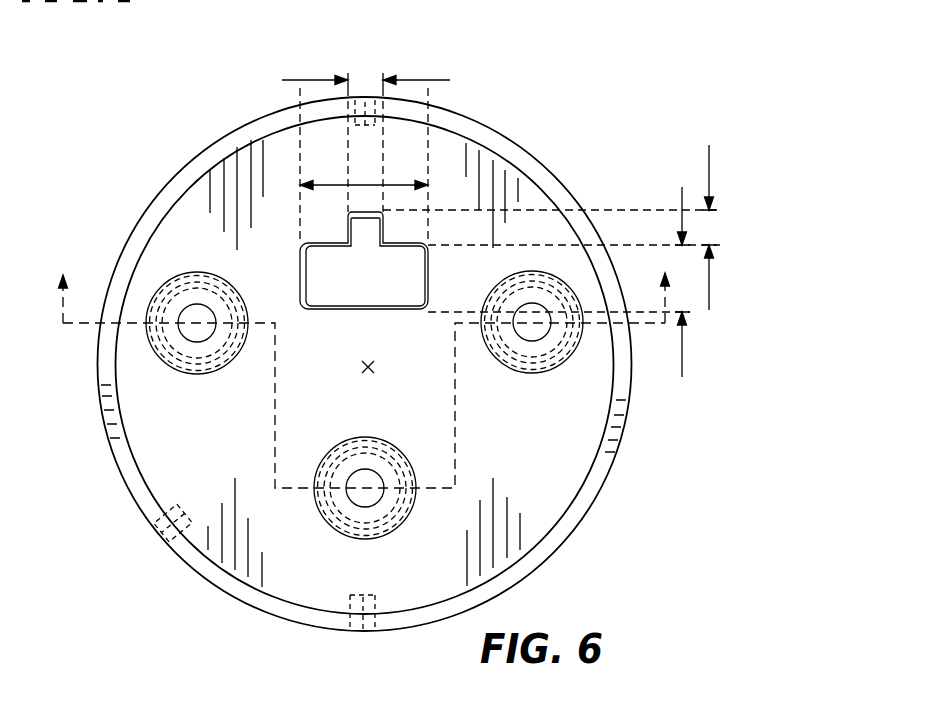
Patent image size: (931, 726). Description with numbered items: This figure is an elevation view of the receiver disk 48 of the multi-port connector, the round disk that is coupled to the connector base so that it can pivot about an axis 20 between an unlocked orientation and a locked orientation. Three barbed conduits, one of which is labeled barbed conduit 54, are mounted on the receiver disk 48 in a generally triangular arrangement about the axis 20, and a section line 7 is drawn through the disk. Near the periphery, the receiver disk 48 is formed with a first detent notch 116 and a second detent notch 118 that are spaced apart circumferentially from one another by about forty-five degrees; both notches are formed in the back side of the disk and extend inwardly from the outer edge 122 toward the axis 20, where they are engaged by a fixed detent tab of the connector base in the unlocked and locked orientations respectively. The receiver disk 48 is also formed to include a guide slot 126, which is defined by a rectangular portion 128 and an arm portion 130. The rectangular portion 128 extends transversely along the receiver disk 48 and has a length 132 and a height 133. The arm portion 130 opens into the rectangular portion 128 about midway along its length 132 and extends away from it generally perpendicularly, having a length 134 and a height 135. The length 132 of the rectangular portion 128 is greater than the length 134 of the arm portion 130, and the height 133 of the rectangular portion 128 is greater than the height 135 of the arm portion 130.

The section line 7- 7 is at (365, 366).
The axis 20 is at (372, 370).
The receiver disk 48 is at (120, 240).
The barbed conduit 54 is at (572, 368).
The first detent notch 116 is at (161, 518).
The second detent notch 118 is at (327, 622).
The outer edge 122 is at (607, 478).
The guide slot 126 is at (293, 252).
The rectangular portion 128 is at (297, 278).
The arm portion 130 is at (348, 225).
The length 132 is at (390, 178).
The height 133 is at (682, 187).
The length 134 is at (428, 80).
The height 135 is at (711, 160).